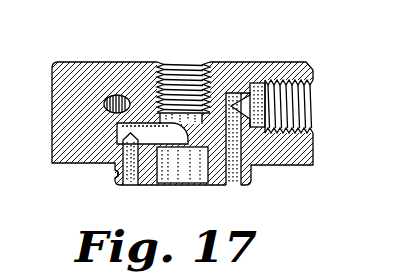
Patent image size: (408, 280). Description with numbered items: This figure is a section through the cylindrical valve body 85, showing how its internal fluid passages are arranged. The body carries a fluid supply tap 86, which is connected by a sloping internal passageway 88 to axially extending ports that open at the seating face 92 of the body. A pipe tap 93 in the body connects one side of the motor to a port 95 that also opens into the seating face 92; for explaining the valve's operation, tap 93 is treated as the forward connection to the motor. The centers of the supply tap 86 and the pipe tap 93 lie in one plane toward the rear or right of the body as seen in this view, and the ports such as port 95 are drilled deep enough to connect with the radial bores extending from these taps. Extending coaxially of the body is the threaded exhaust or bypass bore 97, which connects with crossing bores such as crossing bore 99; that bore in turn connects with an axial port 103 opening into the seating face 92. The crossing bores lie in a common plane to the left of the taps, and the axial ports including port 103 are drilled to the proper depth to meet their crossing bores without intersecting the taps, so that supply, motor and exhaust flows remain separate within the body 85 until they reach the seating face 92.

The cylindrical valve body 85 is at (88, 62).
The fluid supply tap 86 is at (104, 107).
The sloping internal passageway 88 is at (141, 124).
The seating face 92 is at (158, 185).
The pipe tap 93 is at (280, 133).
The port 95 is at (249, 167).
The threaded exhaust or bypass bore 97 is at (204, 62).
The crossing bore 99 is at (145, 121).
The axial port 103 is at (113, 172).